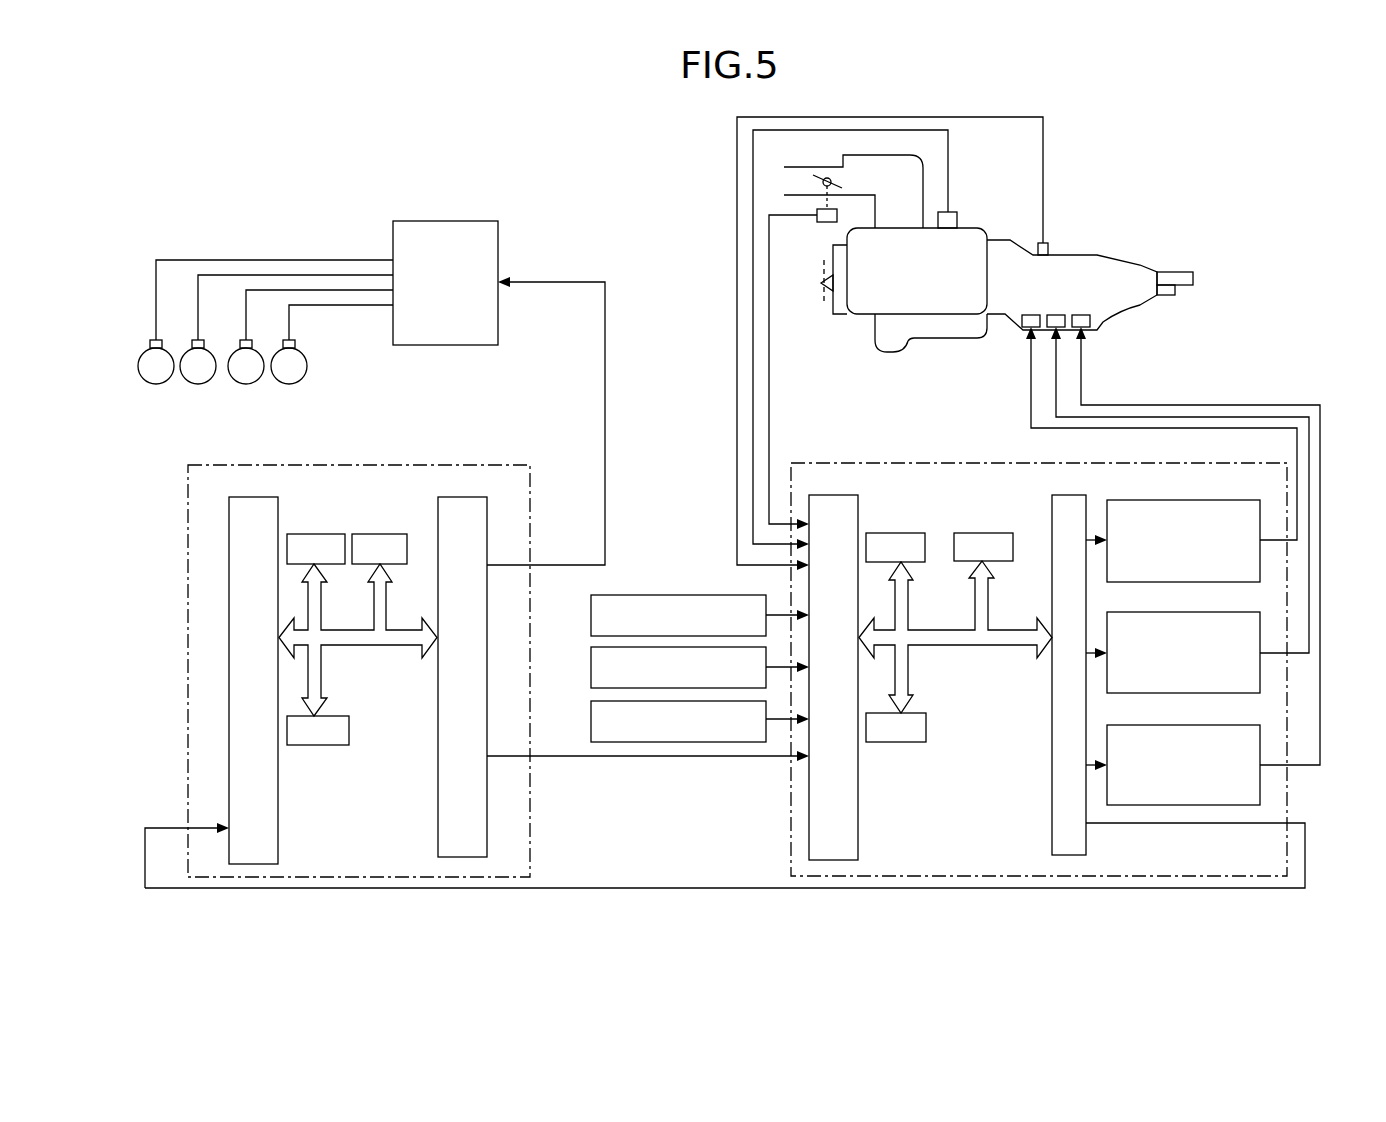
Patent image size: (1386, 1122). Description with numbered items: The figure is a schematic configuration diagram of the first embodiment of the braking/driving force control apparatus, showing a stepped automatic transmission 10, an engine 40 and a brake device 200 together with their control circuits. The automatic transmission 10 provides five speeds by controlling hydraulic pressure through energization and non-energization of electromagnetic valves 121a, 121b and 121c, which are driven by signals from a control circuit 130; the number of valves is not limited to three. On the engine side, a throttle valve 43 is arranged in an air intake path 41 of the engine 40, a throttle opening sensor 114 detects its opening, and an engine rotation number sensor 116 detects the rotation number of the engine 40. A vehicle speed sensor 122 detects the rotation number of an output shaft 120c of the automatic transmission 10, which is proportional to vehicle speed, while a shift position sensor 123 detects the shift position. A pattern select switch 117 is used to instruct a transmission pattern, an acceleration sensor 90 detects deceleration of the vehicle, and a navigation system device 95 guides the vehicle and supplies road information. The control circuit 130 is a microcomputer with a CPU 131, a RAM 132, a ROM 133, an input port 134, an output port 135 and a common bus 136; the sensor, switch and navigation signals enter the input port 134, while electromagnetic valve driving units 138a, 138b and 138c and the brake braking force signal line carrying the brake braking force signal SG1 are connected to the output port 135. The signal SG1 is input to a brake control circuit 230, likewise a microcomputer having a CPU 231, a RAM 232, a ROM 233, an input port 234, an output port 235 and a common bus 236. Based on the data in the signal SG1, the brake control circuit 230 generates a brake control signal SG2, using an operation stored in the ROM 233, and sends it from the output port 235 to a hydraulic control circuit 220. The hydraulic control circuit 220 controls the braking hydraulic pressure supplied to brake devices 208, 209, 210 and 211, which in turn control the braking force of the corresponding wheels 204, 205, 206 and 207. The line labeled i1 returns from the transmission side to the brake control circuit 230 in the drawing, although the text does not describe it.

The stepped automatic transmission 10 is at (1096, 255).
The engine 40 is at (833, 252).
The air intake path 41 is at (868, 155).
The throttle valve 43 is at (817, 176).
The acceleration sensor 90 is at (591, 617).
The navigation system device 95 is at (591, 666).
The throttle opening sensor 114 is at (815, 223).
The engine rotation number sensor 116 is at (955, 212).
The pattern select switch 117 is at (591, 730).
The output shaft 120c is at (1185, 272).
The electromagnetic valve 121a is at (1022, 332).
The electromagnetic valve 121b is at (1065, 332).
The electromagnetic valve 121c is at (1090, 324).
The vehicle speed sensor 122 is at (1172, 297).
The shift position sensor 123 is at (1048, 243).
The control circuit 130 is at (887, 463).
The CPU 131 is at (968, 533).
The RAM 132 is at (925, 713).
The ROM 133 is at (878, 533).
The input port 134 is at (840, 495).
The output port 135 is at (1060, 495).
The common bus 136 is at (1003, 649).
The electromagnetic valve driving unit 138a is at (1204, 500).
The electromagnetic valve driving unit 138b is at (1204, 612).
The electromagnetic valve driving unit 138c is at (1204, 725).
The brake device 200 is at (256, 218).
The wheel 204 is at (153, 384).
The wheel 205 is at (198, 384).
The wheel 206 is at (245, 384).
The wheel 207 is at (289, 384).
The brake device 208 is at (150, 344).
The brake device 209 is at (192, 343).
The brake device 210 is at (240, 343).
The brake device 211 is at (296, 340).
The hydraulic control circuit 220 is at (473, 221).
The brake control circuit 230 is at (413, 465).
The CPU 231 is at (375, 534).
The RAM 232 is at (332, 716).
The ROM 233 is at (310, 534).
The input port 234 is at (262, 497).
The output port 235 is at (459, 497).
The common bus 236 is at (395, 649).
The brake braking force signal SG1 is at (1305, 823).
The brake control signal SG2 is at (605, 405).
The signal i1 is at (1305, 878).